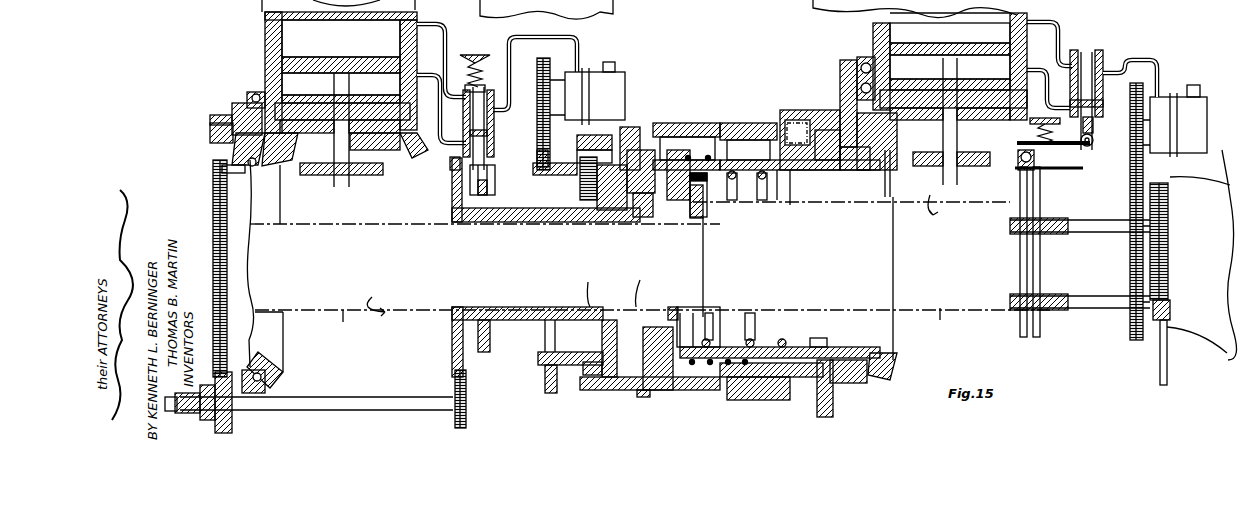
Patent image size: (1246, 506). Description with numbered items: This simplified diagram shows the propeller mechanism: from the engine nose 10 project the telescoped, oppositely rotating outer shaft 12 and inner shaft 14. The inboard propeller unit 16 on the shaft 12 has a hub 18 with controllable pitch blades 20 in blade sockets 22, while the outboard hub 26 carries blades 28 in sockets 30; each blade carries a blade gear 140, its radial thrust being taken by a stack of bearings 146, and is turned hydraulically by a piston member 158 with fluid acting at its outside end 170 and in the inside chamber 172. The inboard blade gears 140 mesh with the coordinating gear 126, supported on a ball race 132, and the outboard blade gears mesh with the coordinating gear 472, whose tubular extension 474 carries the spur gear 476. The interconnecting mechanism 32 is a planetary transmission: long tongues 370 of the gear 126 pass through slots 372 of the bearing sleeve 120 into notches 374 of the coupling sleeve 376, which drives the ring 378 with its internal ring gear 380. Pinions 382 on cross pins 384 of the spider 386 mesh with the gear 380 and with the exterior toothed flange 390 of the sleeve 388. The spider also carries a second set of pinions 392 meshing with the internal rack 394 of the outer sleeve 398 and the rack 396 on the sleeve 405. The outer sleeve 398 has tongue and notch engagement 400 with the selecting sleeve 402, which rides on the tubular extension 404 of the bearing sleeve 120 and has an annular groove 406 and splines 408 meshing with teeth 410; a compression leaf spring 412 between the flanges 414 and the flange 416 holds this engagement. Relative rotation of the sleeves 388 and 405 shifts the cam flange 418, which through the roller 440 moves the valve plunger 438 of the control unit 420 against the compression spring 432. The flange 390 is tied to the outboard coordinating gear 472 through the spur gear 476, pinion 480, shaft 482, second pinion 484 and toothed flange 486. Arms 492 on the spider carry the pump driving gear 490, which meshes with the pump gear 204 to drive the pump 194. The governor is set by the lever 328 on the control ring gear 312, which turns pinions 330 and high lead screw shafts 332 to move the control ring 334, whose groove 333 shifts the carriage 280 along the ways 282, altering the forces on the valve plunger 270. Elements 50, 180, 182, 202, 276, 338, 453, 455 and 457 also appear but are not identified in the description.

The engine nose 10 is at (1222, 150).
The radially outer shaft 12 is at (812, 278).
The radially inner shaft 14 is at (343, 312).
The inboard propeller unit 16 is at (953, 193).
The hub 18 is at (925, 168).
The controllable pitch blades 20 is at (813, 12).
The blade sockets 22 is at (840, 80).
The hub 26 is at (210, 128).
The controllable pitch blades 28 is at (268, 12).
The sockets 30 is at (232, 98).
The interconnecting mechanism 32 is at (726, 84).
The cylinder 50 is at (1068, 2).
The bearing sleeve 120 is at (800, 115).
The coordinating gear 126 is at (870, 180).
The ball race 132 is at (232, 118).
The blade gears 140 is at (384, 176).
The stack of bearings 146 is at (254, 92).
The piston member 158 is at (376, 57).
The outside end of piston member 170 is at (646, 38).
The chamber 172 is at (646, 75).
The conduit 180 is at (433, 75).
The conduit 182 is at (440, 24).
The pump 194 is at (615, 88).
The valve 202 is at (1088, 78).
The pump gear 204 is at (1130, 130).
The valve plunger 270 is at (1118, 62).
The lever 276 is at (1060, 150).
The carriage 280 is at (1024, 170).
The ways 282 is at (1068, 170).
The control ring gear 312 is at (1170, 267).
The lever 328 is at (1168, 365).
The pinions 330 is at (1168, 220).
The high lead screw shafts 332 is at (1085, 294).
The groove 333 is at (1020, 247).
The control ring 334 is at (1020, 277).
The gear 338 is at (1130, 330).
The long tongues 370 is at (792, 200).
The slots 372 is at (830, 345).
The notches 374 is at (780, 340).
The coupling sleeve 376 is at (760, 190).
The ring 378 is at (688, 218).
The internal ring gear 380 is at (620, 130).
The pinions 382 is at (688, 124).
The cross pins 384 is at (629, 186).
The spider 386 is at (606, 205).
The sleeve 388 is at (560, 222).
The exterior toothed flange 390 is at (634, 222).
The second set of pinions 392 is at (545, 192).
The internal rack 394 is at (545, 134).
The rack 396 is at (586, 222).
The outer sleeve 398 is at (648, 132).
The tongue and notch engagement 400 is at (672, 105).
The selecting sleeve 402 is at (735, 122).
The tubular extension 404 is at (778, 200).
The sleeve 405 is at (535, 222).
The annular groove 406 is at (680, 122).
The splines 408 is at (756, 124).
The teeth 410 is at (730, 180).
The compression leaf spring 412 is at (718, 340).
The flanges 414 is at (720, 390).
The flange 416 is at (752, 325).
The cam flange 418 is at (500, 340).
The control unit 420 is at (500, 62).
The compression spring 432 is at (474, 56).
The valve plunger 438 is at (492, 134).
The roller 440 is at (492, 178).
The plate 453 is at (775, 125).
The pin 455 is at (712, 195).
The pin 457 is at (708, 312).
The coordinating gear 472 is at (278, 360).
The tubular extension 474 is at (252, 247).
The spur gear 476 is at (230, 202).
The pinion 480 is at (232, 420).
The shaft 482 is at (381, 400).
The second pinion 484 is at (466, 405).
The toothed flange 486 is at (453, 365).
The pump driving gear 490 is at (555, 393).
The arms 492 is at (590, 352).